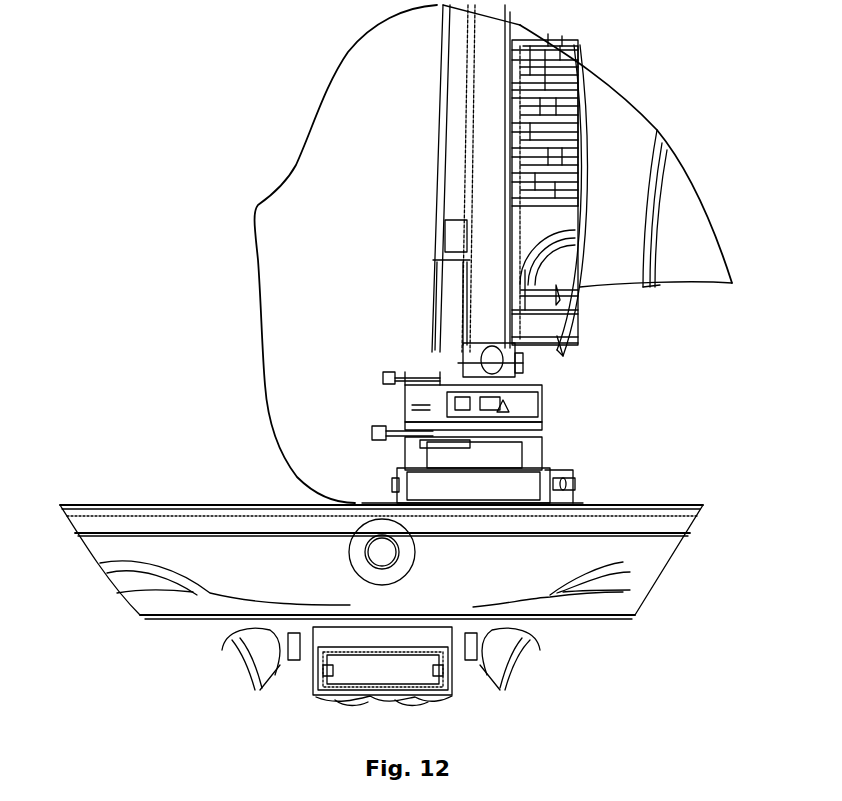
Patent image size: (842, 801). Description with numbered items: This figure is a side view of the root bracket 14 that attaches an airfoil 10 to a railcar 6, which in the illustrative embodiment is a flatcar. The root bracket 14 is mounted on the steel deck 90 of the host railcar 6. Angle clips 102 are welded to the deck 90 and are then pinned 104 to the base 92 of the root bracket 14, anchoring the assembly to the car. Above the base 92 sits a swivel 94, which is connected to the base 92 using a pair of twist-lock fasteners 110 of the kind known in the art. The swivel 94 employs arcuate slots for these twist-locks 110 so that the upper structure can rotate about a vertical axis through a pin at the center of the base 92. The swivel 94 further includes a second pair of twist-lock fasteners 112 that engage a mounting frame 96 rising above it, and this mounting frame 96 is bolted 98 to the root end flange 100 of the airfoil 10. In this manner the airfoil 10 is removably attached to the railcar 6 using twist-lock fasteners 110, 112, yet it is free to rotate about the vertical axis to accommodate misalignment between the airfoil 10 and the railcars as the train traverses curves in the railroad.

The host railcar 6 is at (185, 617).
The airfoil 10 is at (655, 207).
The root bracket 14 is at (250, 208).
The steel deck 90 is at (130, 503).
The base 92 is at (405, 452).
The swivel 94 is at (405, 400).
The mounting frame 96 is at (440, 252).
The bolts 98 is at (523, 50).
The root end flange 100 is at (575, 330).
The angle clips 102 is at (583, 502).
The pins 104 is at (567, 480).
The twist-lock fasteners 110 is at (390, 440).
The bolt 112 is at (403, 377).